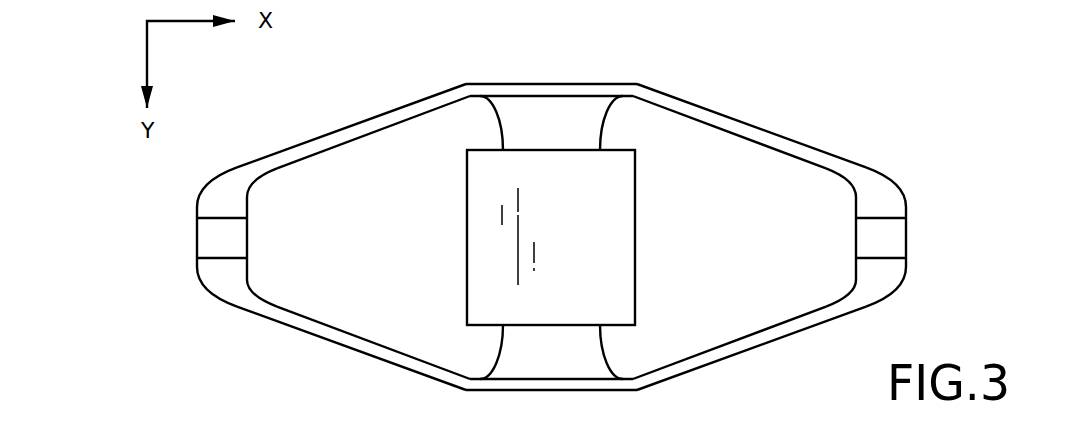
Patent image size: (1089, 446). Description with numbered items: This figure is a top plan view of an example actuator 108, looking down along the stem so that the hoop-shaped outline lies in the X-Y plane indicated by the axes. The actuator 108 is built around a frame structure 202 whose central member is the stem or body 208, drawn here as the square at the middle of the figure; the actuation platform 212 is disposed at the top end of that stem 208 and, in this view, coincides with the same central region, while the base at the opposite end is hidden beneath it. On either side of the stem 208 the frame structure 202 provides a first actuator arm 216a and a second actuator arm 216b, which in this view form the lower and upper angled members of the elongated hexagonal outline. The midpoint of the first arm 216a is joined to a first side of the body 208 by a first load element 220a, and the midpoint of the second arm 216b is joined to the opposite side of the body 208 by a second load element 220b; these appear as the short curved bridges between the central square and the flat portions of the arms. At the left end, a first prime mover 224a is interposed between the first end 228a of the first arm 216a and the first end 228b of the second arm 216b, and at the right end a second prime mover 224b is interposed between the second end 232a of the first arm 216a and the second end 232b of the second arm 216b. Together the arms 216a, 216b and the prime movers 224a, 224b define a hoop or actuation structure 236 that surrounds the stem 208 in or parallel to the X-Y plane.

The actuator 108 is at (737, 108).
The frame structure 202 is at (748, 352).
The stem or body 208 is at (636, 278).
The actuation platform 212 is at (558, 170).
The first actuator arm 216a is at (370, 348).
The second actuator arm 216b is at (397, 108).
The first load element 220a is at (617, 368).
The second load element 220b is at (492, 112).
The first prime mover 224a is at (217, 231).
The second prime mover 224b is at (897, 239).
The first end of the first actuator arm 228a is at (215, 273).
The first end of the second actuator arm 228b is at (222, 192).
The second end of the first actuator arm 232a is at (895, 278).
The second end of the second actuator arm 232b is at (892, 199).
The hoop or actuation structure 236 is at (822, 148).